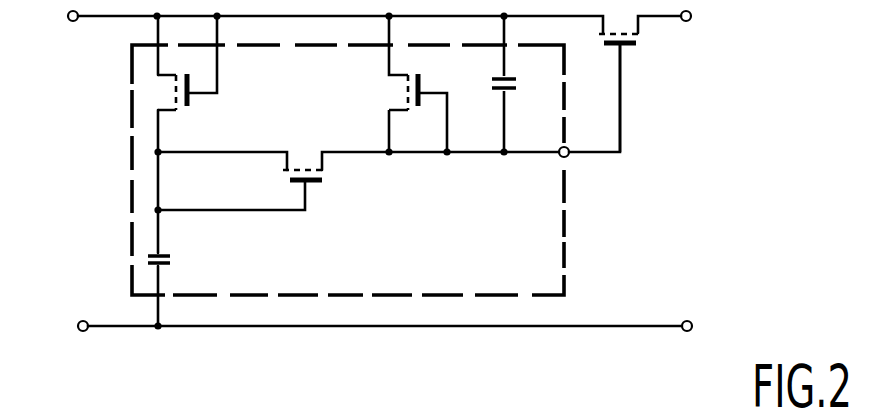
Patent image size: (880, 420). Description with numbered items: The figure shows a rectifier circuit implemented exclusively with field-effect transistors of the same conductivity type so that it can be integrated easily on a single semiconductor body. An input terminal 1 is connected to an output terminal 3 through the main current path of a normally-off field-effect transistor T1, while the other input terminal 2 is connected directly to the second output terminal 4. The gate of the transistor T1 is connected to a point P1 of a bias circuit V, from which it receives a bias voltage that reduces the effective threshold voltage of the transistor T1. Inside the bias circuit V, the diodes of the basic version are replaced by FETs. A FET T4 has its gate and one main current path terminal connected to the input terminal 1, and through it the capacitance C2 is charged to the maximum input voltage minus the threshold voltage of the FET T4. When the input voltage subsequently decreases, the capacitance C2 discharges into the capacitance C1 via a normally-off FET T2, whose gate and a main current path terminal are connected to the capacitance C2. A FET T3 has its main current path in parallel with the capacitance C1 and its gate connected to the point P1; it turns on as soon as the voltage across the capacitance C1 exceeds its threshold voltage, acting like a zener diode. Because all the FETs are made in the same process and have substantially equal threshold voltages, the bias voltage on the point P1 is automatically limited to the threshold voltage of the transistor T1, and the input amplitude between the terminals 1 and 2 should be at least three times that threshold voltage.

The input terminal 1 is at (77, 30).
The other input terminal 2 is at (80, 298).
The output terminal 3 is at (692, 16).
The second output terminal 4 is at (694, 305).
The normally-off field-effect transistor T1 is at (632, 40).
The normally-off FET T2 is at (327, 178).
The FET T3 is at (411, 73).
The FET T4 is at (190, 107).
The capacitance C1 is at (518, 82).
The capacitance C2 is at (172, 261).
The point of the bias circuit P1 is at (571, 162).
The bias circuit V is at (568, 258).